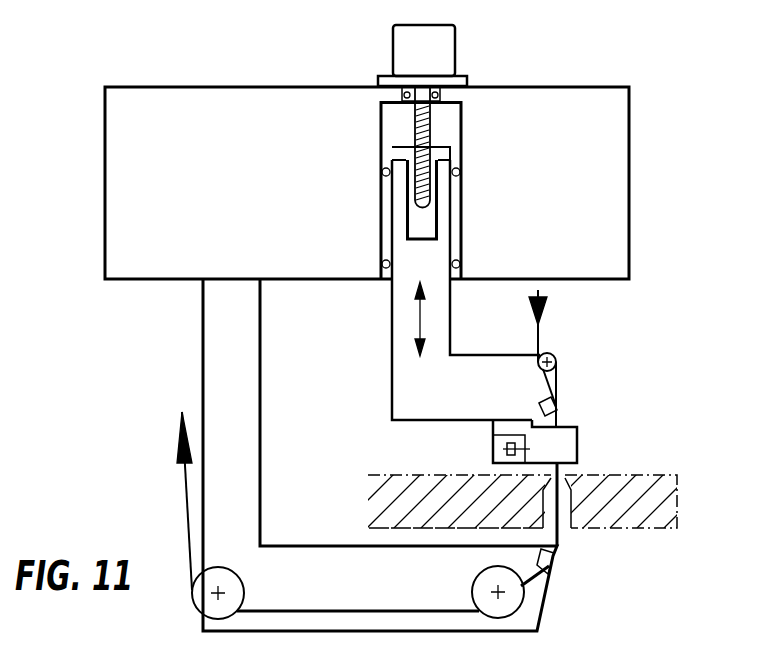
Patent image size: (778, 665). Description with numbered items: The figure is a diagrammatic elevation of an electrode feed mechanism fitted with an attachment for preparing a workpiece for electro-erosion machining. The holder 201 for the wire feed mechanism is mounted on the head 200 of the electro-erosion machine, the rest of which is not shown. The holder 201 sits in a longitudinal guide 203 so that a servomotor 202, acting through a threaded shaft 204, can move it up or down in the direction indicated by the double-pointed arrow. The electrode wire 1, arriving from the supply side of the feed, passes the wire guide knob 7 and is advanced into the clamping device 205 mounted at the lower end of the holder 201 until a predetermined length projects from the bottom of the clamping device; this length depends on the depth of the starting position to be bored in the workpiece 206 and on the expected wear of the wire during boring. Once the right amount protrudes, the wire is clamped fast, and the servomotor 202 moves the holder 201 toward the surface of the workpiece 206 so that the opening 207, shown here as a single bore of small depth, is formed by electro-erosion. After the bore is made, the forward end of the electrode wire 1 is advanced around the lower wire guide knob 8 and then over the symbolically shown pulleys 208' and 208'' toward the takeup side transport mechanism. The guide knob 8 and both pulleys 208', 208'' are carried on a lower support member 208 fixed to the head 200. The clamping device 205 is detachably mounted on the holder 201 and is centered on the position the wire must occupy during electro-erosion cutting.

The electrode wire 1 is at (541, 335).
The wire guide knob 7 is at (553, 403).
The lower wire guide knob 8 is at (552, 558).
The head 200 is at (633, 158).
The holder 201 is at (400, 338).
The servomotor 202 is at (445, 32).
The longitudinal guide 203 is at (387, 237).
The threaded shaft 204 is at (430, 115).
The clamping device 205 is at (580, 433).
The workpiece 206 is at (672, 500).
The opening 207 is at (573, 477).
The lower support member 208 is at (342, 455).
The pulley 208' is at (472, 592).
The pulley 208'' is at (246, 593).